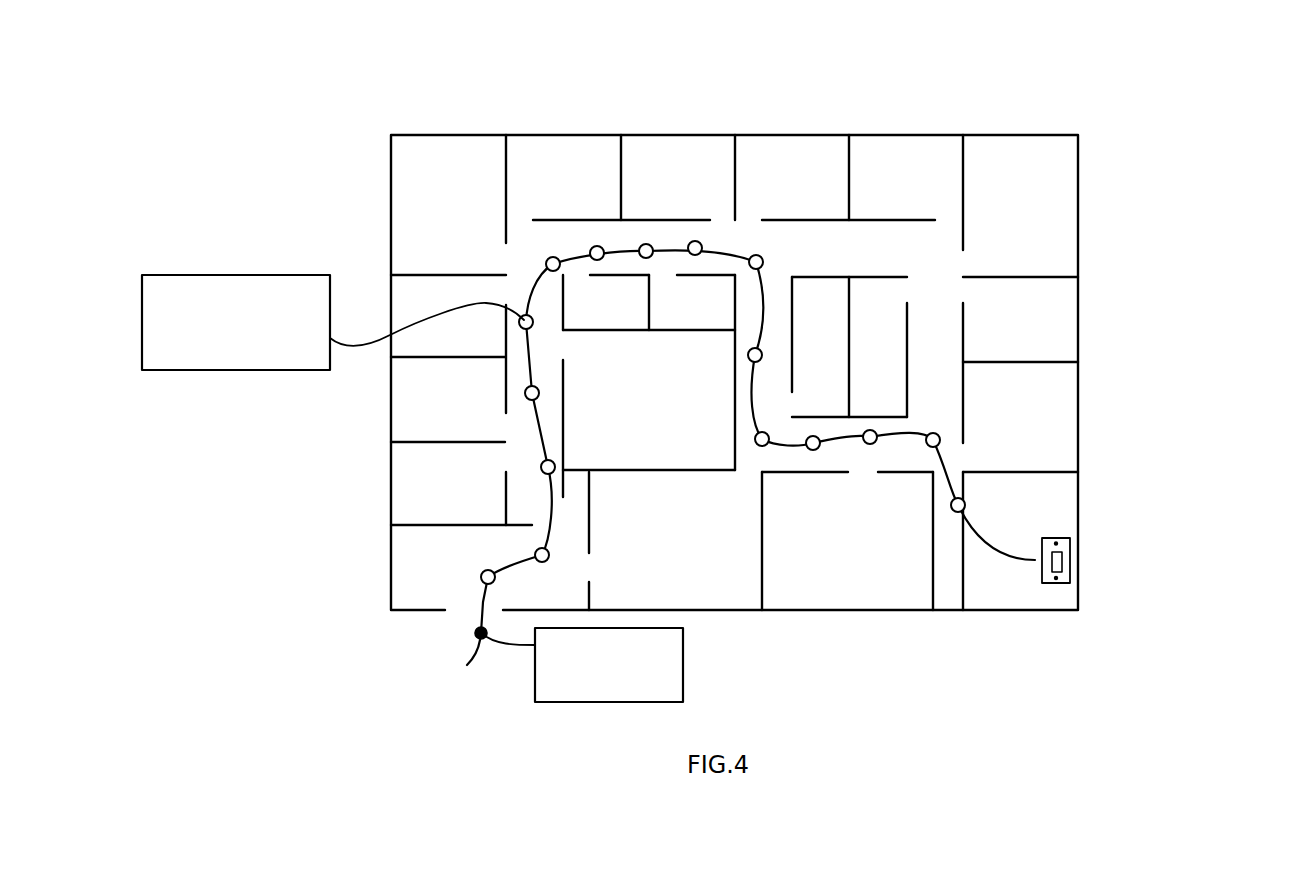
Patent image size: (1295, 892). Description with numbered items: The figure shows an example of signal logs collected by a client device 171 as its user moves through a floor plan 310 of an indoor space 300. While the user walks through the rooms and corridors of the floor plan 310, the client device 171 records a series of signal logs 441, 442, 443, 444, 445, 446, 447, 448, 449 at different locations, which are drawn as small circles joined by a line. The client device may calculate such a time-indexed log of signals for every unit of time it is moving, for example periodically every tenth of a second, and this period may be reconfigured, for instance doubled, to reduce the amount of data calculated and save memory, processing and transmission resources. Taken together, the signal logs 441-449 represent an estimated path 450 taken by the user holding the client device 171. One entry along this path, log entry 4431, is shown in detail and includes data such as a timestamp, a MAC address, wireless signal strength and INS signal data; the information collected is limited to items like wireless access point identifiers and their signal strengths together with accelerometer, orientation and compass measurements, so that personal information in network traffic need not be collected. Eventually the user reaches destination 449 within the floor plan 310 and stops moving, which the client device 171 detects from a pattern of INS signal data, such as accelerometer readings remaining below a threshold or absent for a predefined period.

The indoor space 300 is at (1286, 64).
The floor plan 310 is at (952, 624).
The client device 171 is at (1070, 562).
The signal log 441 is at (482, 573).
The signal log 442 is at (552, 557).
The signal log 443 is at (533, 327).
The log entry 4431 is at (208, 275).
The signal log 444 is at (544, 264).
The signal log 445 is at (767, 257).
The signal log 446 is at (767, 350).
The signal log 447 is at (768, 431).
The signal log 448 is at (933, 428).
The destination 449 is at (968, 503).
The estimated path 450 is at (527, 363).